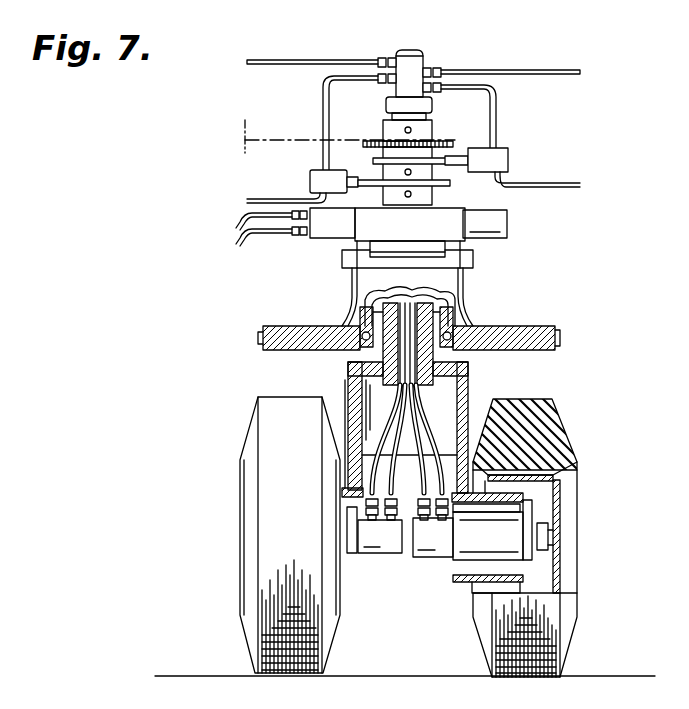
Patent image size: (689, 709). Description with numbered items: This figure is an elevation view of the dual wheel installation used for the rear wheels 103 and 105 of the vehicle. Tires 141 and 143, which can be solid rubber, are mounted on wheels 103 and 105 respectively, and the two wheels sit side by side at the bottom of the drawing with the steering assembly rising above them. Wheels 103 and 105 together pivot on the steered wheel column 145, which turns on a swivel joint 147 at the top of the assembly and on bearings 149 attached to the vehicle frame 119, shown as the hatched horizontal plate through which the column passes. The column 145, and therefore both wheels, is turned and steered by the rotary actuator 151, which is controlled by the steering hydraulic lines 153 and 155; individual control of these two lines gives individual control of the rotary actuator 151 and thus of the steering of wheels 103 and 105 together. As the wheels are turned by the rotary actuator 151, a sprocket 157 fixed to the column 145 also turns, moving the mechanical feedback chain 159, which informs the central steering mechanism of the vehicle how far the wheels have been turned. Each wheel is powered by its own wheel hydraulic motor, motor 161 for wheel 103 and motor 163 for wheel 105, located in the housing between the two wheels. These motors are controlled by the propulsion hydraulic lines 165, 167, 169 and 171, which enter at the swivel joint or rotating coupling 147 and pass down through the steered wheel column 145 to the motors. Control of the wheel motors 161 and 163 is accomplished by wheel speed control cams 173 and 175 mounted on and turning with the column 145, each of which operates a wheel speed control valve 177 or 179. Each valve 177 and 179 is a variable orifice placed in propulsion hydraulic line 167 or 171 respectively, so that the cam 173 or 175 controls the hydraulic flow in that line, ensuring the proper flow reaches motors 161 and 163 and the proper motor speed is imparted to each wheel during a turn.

The rear wheel 103 is at (240, 560).
The rear wheel 105 is at (557, 573).
The vehicle frame 119 is at (553, 331).
The tire 141 is at (252, 627).
The tire 143 is at (562, 634).
The steered wheel column 145 is at (445, 345).
The swivel joint 147 is at (420, 60).
The bearings 149 is at (372, 340).
The rotary actuator 151 is at (507, 229).
The steering hydraulic line 153 is at (236, 224).
The steering hydraulic line 155 is at (240, 243).
The sprocket 157 is at (376, 136).
The mechanical feedback chain 159 is at (283, 138).
The wheel hydraulic motor 161 is at (362, 541).
The wheel hydraulic motor 163 is at (462, 546).
The propulsion hydraulic line 165 is at (290, 60).
The propulsion hydraulic line 167 is at (320, 92).
The propulsion hydraulic line 169 is at (535, 70).
The propulsion hydraulic line 171 is at (497, 120).
The wheel speed control cam 173 is at (374, 161).
The wheel speed control cam 175 is at (451, 193).
The wheel speed control valve 177 is at (310, 179).
The wheel speed control valve 179 is at (505, 163).